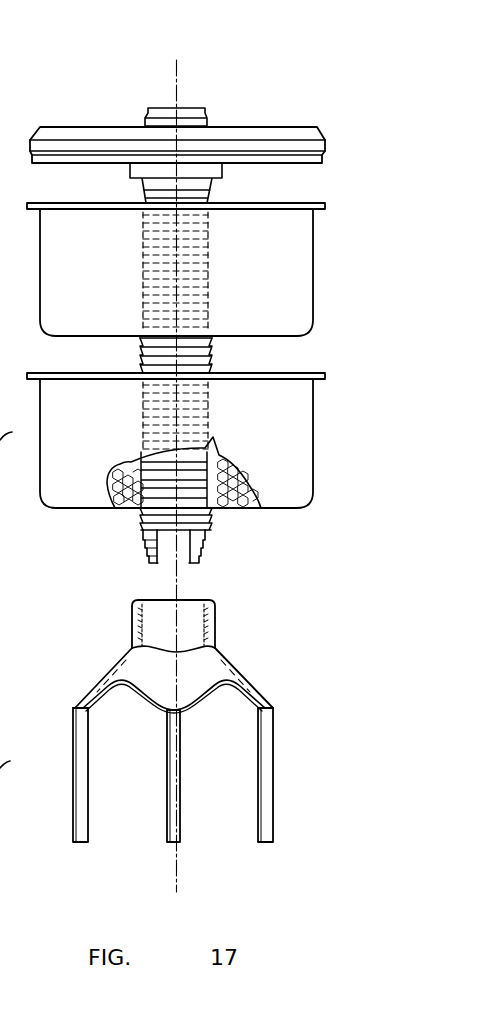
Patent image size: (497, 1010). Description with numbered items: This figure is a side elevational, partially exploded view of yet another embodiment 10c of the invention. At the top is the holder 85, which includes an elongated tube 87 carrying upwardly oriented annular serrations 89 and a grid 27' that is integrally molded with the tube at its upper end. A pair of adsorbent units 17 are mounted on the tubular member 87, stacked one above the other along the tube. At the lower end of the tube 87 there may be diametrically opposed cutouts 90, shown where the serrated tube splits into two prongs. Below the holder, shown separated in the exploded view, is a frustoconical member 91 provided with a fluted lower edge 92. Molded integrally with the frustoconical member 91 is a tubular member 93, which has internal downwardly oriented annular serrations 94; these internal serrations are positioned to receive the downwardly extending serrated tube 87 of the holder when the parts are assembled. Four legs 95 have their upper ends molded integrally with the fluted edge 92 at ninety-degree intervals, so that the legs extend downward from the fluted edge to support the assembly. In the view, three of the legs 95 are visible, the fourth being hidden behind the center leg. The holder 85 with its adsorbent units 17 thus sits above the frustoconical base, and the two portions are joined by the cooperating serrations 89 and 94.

The embodiment 10c is at (291, 72).
The holder 85 is at (206, 119).
The grid 27' is at (198, 147).
The adsorbent units 17 is at (313, 283).
The elongated tube 87 is at (208, 531).
The annular serrations 89 is at (143, 548).
The cutouts 90 is at (190, 548).
The tubular member 93 is at (216, 641).
The annular serrations 94 is at (127, 629).
The frustoconical member 91 is at (252, 692).
The fluted lower edge 92 is at (195, 707).
The legs 95 is at (88, 799).